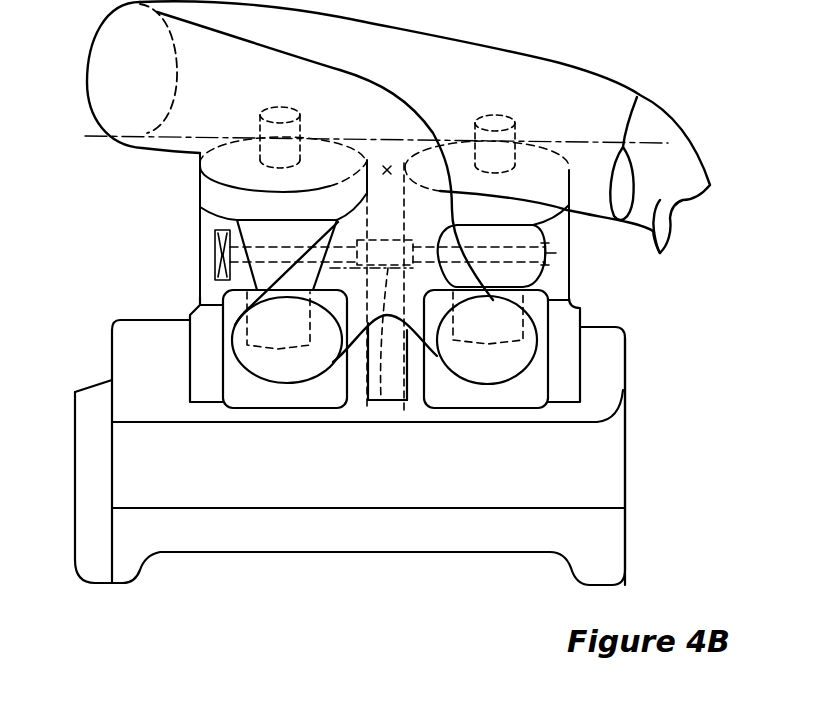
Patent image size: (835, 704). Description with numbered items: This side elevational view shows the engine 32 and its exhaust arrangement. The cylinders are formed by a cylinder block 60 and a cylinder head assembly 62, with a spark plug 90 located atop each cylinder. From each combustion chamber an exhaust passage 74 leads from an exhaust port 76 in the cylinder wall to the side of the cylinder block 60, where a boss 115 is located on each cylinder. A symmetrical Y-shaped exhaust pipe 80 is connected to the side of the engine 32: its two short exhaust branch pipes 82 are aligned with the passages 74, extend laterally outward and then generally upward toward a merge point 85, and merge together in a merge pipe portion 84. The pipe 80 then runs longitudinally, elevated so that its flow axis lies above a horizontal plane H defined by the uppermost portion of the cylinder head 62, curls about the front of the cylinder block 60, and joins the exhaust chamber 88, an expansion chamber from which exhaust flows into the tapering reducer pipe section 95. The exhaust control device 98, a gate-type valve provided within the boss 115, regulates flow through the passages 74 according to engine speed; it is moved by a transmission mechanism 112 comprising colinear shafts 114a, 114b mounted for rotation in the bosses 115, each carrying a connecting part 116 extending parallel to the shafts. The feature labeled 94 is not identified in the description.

The horizontal reference plane H is at (90, 133).
The engine 32 is at (690, 260).
The cylinder block 60 is at (607, 450).
The cylinder head assembly 62 is at (203, 191).
The exhaust passage 74 is at (268, 232).
The exhaust port 76 is at (287, 343).
The exhaust pipe 80 is at (421, 204).
The exhaust branch pipe 82 is at (273, 363).
The merge pipe portion 84 is at (400, 117).
The merge point 85 is at (386, 165).
The exhaust chamber 88 is at (450, 47).
The spark plug 90 is at (508, 136).
The lower finger surface 94 is at (128, 154).
The reducer pipe section 95 is at (678, 158).
The exhaust control device 98 is at (243, 315).
The transmission mechanism 112 is at (217, 270).
The shaft 114a is at (207, 229).
The shaft 114b is at (549, 255).
The boss 115 is at (240, 388).
The connecting part 116 is at (381, 400).